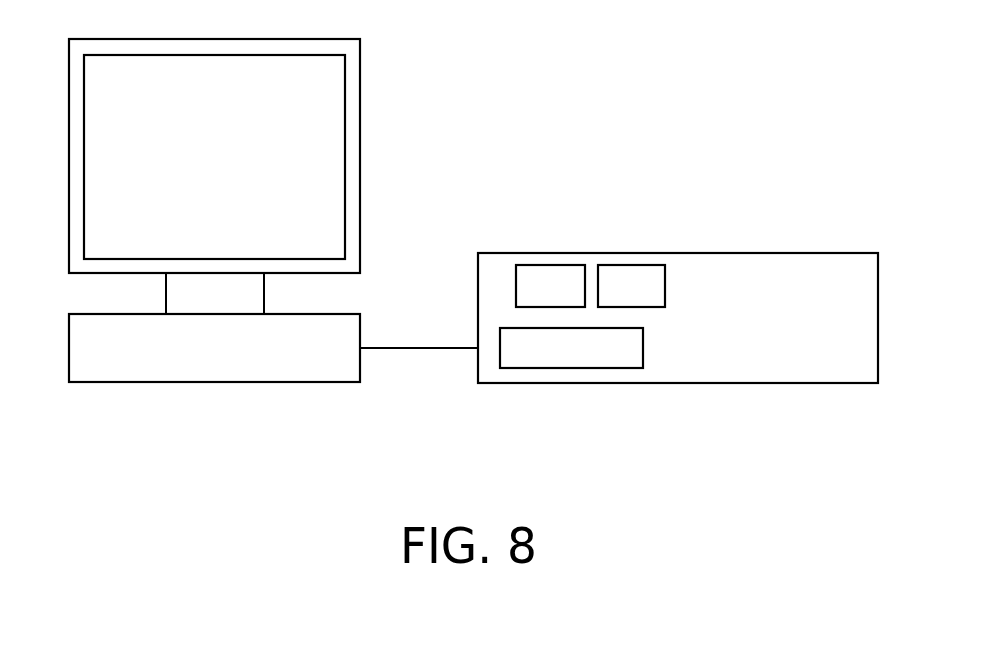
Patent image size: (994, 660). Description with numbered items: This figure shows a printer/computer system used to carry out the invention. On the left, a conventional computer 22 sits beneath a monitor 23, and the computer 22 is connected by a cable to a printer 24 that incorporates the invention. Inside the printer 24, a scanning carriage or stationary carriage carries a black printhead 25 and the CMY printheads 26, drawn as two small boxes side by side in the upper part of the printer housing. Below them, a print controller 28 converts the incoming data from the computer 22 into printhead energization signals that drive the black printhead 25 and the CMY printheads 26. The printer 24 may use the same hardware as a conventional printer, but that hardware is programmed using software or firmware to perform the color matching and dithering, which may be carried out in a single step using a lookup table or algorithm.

The computer 22 is at (361, 330).
The monitor 23 is at (361, 147).
The printer 24 is at (763, 189).
The black printhead 25 is at (551, 265).
The CMY printheads 26 is at (636, 265).
The print controller 28 is at (573, 368).